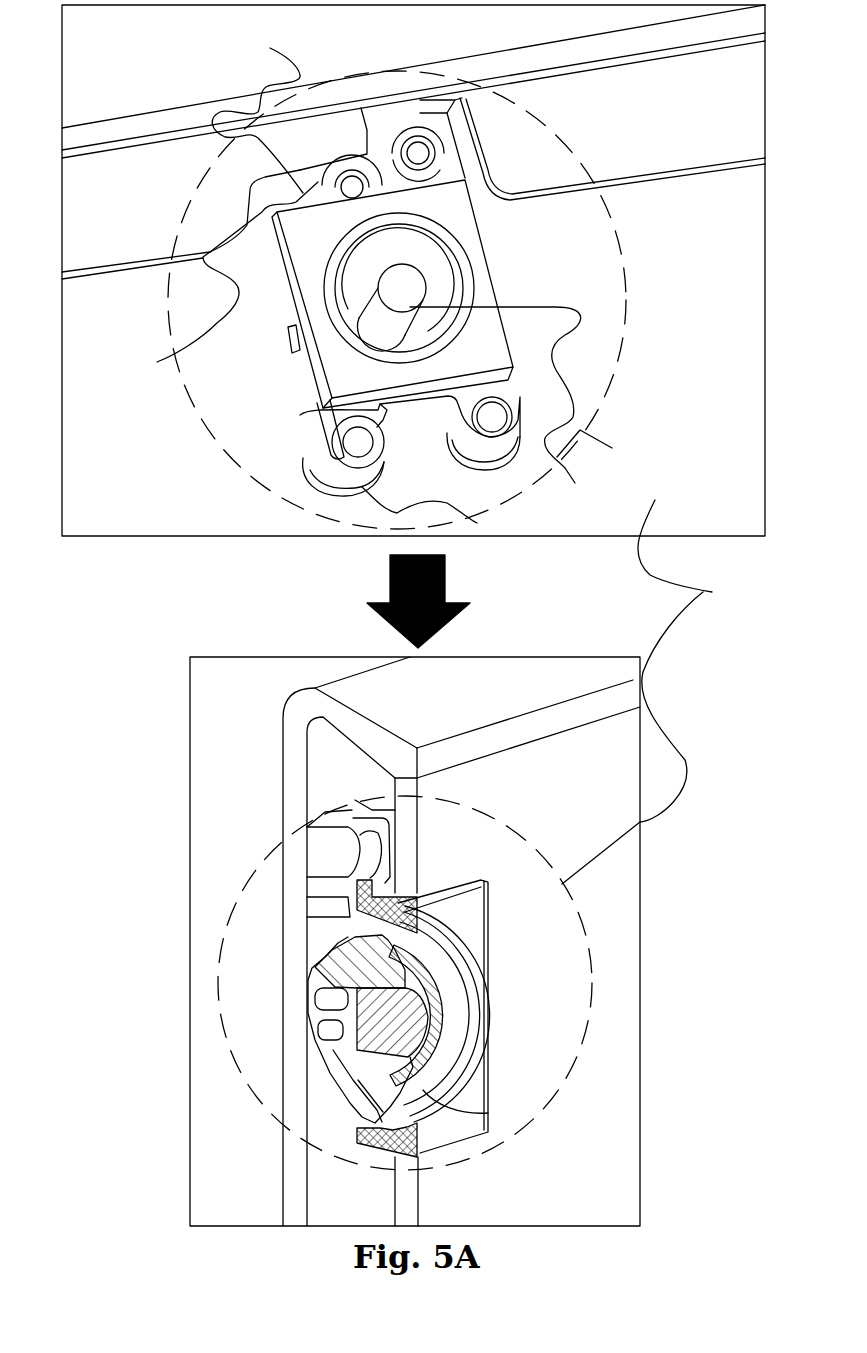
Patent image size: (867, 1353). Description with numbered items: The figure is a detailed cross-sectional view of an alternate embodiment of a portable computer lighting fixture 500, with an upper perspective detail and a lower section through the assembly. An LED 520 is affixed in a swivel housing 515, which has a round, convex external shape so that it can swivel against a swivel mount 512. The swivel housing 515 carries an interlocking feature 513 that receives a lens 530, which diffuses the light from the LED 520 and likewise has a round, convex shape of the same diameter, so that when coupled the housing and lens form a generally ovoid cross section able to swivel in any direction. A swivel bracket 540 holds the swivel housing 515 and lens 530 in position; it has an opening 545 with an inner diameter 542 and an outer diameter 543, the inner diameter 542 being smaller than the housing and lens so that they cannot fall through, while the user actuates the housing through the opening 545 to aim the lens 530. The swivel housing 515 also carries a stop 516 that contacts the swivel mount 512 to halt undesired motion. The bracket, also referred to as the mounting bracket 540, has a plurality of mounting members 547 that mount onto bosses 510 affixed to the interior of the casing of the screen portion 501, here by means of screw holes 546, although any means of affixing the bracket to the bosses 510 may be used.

The portable computer lighting fixture 500 is at (655, 692).
The screen portion 501 is at (637, 981).
The bosses 510 is at (310, 193).
The swivel mount 512 is at (325, 932).
The interlocking feature 513 is at (420, 1153).
The swivel housing 515 is at (327, 1065).
The stop 516 is at (327, 933).
The LED 520 is at (519, 367).
The lens 530 is at (360, 1104).
The swivel bracket 540 is at (477, 912).
The inner diameter 542 is at (520, 967).
The outer diameter 543 is at (440, 1120).
The opening 545 is at (437, 277).
The screw holes 546 is at (357, 443).
The mounting members 547 is at (337, 172).